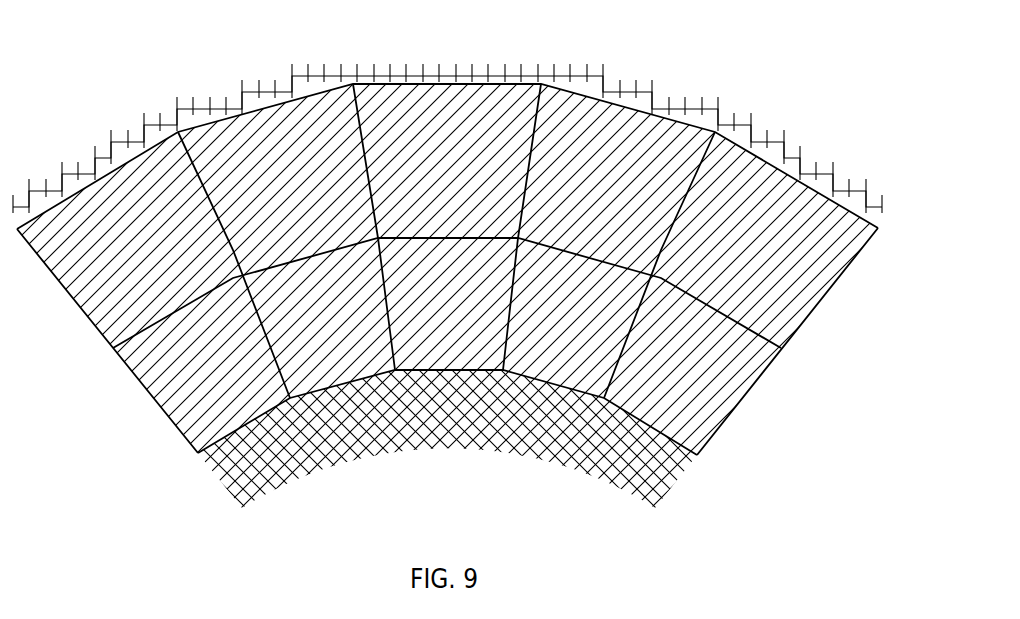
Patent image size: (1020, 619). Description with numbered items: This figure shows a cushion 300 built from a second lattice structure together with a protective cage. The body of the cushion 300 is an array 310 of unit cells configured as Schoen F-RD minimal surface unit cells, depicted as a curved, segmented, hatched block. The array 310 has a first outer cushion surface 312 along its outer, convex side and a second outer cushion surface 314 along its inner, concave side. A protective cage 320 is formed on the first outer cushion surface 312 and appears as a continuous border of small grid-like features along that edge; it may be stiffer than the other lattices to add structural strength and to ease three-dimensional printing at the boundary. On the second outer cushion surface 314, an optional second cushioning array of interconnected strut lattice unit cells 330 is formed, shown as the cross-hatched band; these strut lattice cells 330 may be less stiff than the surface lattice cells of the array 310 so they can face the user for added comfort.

The cushion 300 is at (813, 73).
The array of unit cells 310 is at (799, 349).
The first outer cushion surface 312 is at (658, 110).
The second outer cushion surface 314 is at (243, 432).
The protective cage 320 is at (458, 56).
The second cushioning array of interconnected strut lattice unit cells 330 is at (612, 476).